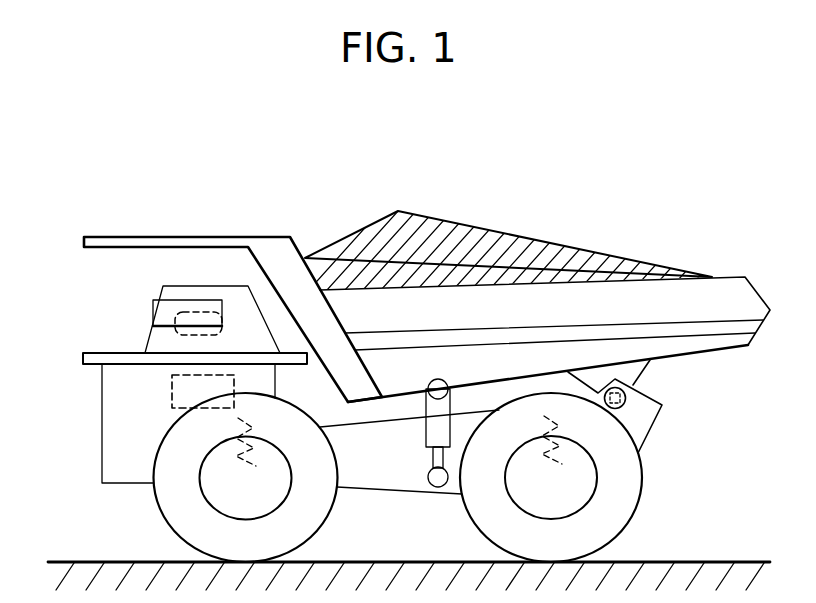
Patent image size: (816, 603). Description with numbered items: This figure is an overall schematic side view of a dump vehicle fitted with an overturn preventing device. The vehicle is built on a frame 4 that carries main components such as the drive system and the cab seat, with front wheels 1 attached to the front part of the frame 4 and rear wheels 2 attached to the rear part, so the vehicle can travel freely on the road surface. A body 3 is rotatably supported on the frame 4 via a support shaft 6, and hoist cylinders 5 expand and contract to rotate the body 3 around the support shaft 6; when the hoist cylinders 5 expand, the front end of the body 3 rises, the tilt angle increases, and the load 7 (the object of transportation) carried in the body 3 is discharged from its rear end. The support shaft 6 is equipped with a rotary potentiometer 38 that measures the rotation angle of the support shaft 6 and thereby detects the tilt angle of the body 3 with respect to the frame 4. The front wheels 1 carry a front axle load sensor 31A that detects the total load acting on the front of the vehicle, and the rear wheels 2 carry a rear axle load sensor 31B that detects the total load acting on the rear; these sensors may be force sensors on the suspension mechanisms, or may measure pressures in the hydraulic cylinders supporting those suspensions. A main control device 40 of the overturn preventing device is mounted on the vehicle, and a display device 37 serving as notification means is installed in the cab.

The front wheels 1 is at (170, 503).
The rear wheels 2 is at (627, 507).
The body 3 is at (268, 237).
The frame 4 is at (368, 478).
The hoist cylinders 5 is at (433, 440).
The support shaft 6 is at (620, 384).
The load 7 is at (531, 238).
The display device 37 is at (175, 316).
The potentiometer 38 is at (627, 398).
The main control device 40 is at (172, 390).
The front axle load sensor 31A is at (240, 424).
The rear axle load sensor 31B is at (588, 453).